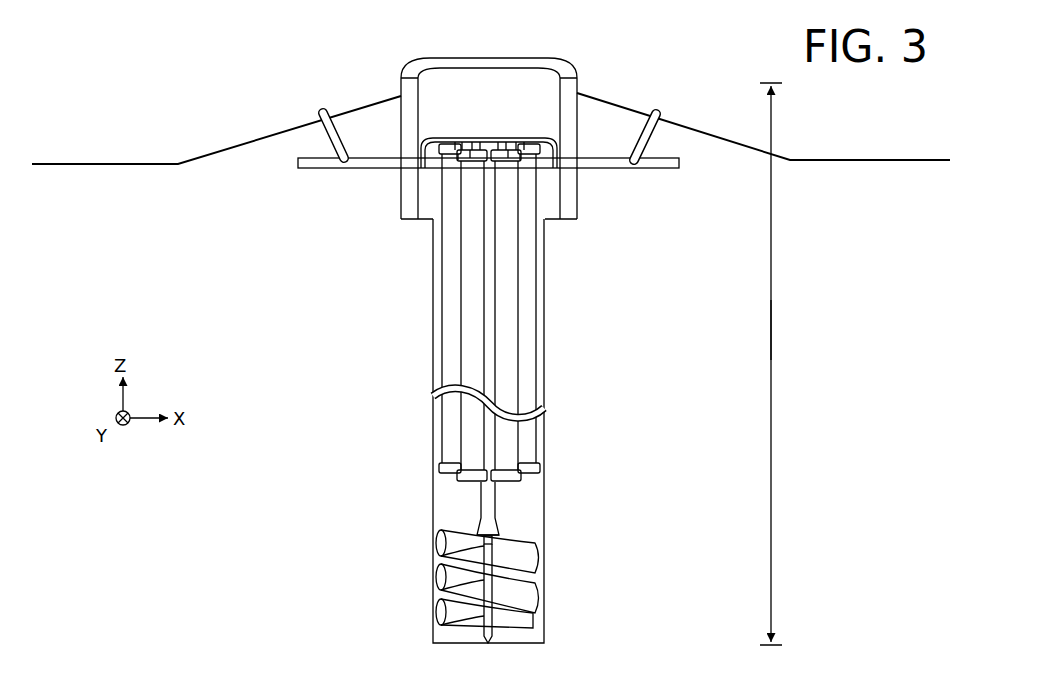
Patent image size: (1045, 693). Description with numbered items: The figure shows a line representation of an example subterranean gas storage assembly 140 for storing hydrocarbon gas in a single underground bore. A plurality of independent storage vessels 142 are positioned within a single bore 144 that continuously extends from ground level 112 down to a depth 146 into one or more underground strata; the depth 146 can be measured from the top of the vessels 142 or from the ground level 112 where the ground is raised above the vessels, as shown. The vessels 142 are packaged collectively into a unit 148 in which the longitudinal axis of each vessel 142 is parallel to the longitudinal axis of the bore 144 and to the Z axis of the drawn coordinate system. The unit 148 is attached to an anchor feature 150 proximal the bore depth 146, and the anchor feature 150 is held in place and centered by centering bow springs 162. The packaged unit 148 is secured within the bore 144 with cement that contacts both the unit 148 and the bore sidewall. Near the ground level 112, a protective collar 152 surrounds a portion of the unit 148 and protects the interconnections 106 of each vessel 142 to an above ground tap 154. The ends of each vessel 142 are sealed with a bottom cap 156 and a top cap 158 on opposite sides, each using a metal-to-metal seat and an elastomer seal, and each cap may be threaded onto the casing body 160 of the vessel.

The subterranean gas storage assembly 140 is at (130, 46).
The ground level 112 is at (491, 128).
The protective collar 152 is at (563, 74).
The above ground tap 154 is at (321, 110).
The interconnections 106 is at (478, 137).
The bore 144 is at (432, 293).
The casing body 160 is at (442, 322).
The unit 148 is at (539, 284).
The storage vessels 142 is at (528, 330).
The top cap 158 is at (513, 172).
The bottom cap 156 is at (432, 471).
The depth 146 is at (788, 364).
The anchor feature 150 is at (431, 582).
The centering bow springs 162 is at (430, 541).